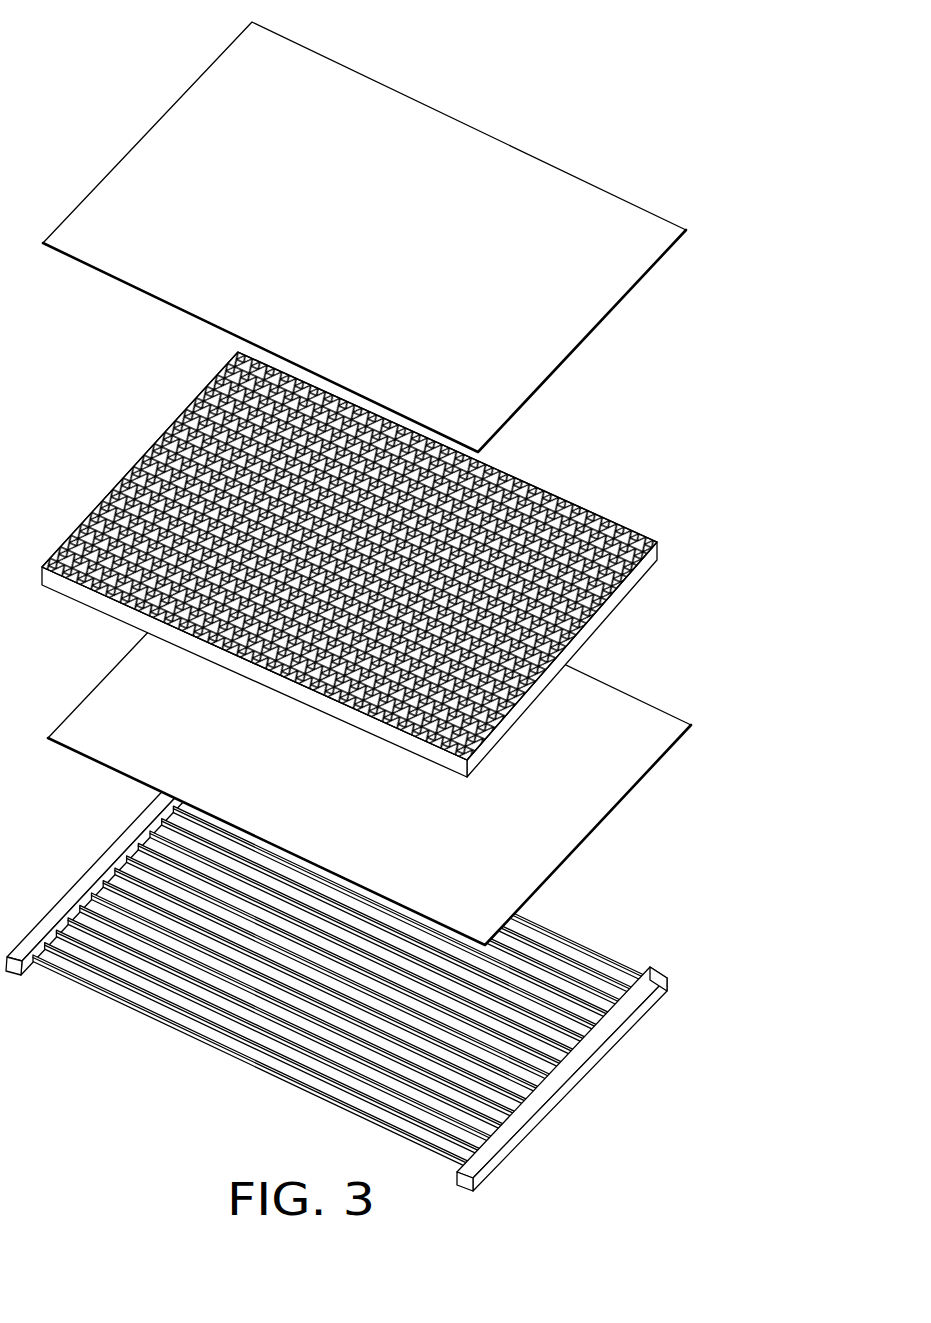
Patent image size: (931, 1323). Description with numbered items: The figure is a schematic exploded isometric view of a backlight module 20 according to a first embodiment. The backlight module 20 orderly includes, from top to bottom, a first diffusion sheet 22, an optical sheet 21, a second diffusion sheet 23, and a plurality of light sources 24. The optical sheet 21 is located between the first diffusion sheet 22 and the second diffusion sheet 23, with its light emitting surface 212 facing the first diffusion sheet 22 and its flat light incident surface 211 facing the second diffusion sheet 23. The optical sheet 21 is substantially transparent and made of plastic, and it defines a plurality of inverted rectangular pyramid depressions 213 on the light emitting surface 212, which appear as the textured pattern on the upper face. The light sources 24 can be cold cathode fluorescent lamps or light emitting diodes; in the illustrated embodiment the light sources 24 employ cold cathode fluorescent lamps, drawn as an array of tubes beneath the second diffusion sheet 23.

The backlight module 20 is at (473, 36).
The optical sheet 21 is at (392, 564).
The light incident surface 211 is at (628, 611).
The light emitting surface 212 is at (607, 515).
The inverted rectangular pyramid depressions 213 is at (205, 387).
The first diffusion sheet 22 is at (497, 188).
The second diffusion sheet 23 is at (607, 783).
The light sources 24 is at (592, 958).